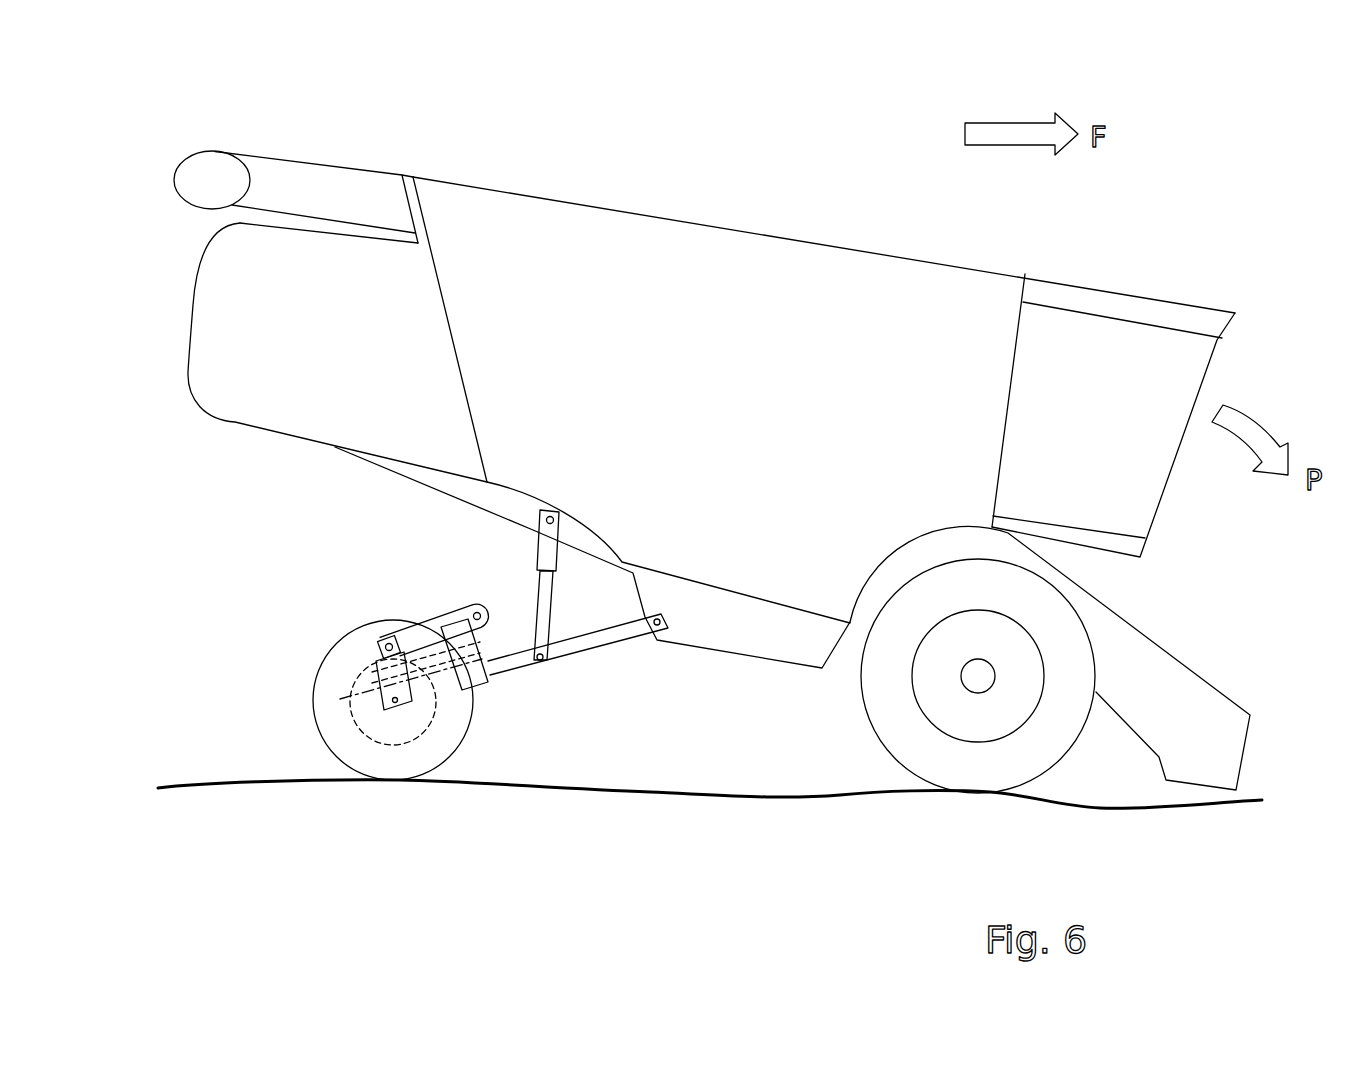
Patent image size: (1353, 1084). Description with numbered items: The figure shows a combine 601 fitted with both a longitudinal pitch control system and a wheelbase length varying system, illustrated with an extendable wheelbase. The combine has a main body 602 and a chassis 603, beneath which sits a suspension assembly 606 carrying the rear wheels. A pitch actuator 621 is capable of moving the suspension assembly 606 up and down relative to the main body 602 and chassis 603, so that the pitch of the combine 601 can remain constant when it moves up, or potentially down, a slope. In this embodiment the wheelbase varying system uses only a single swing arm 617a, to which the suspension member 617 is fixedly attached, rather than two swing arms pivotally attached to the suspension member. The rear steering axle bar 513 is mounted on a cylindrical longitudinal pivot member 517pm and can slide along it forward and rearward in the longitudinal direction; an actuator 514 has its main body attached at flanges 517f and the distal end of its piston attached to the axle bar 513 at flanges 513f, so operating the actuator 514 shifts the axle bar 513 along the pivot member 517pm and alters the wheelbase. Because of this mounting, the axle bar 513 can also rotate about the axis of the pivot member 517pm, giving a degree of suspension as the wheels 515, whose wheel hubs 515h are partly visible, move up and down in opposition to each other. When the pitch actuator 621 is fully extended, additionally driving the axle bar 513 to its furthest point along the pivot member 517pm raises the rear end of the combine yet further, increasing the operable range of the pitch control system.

The combine 601 is at (673, 183).
The main body 602 is at (846, 274).
The chassis 603 is at (797, 645).
The suspension assembly 606 is at (230, 684).
The rear steering axle bar 513 is at (372, 663).
The flanges 513f is at (382, 670).
The actuator 514 is at (430, 627).
The wheels 515 is at (332, 718).
The wheel hubs 515h is at (397, 713).
The flanges 517f is at (493, 605).
The cylindrical longitudinal pivot member 517pm is at (432, 677).
The suspension member 617 is at (477, 672).
The swing arm 617a is at (625, 632).
The pitch actuator 621 is at (547, 548).